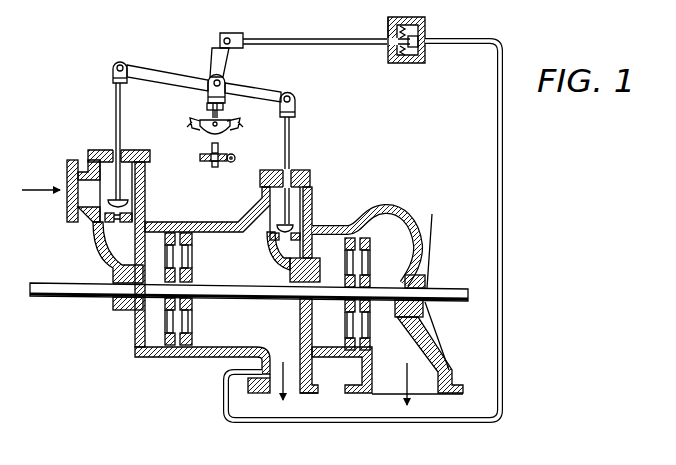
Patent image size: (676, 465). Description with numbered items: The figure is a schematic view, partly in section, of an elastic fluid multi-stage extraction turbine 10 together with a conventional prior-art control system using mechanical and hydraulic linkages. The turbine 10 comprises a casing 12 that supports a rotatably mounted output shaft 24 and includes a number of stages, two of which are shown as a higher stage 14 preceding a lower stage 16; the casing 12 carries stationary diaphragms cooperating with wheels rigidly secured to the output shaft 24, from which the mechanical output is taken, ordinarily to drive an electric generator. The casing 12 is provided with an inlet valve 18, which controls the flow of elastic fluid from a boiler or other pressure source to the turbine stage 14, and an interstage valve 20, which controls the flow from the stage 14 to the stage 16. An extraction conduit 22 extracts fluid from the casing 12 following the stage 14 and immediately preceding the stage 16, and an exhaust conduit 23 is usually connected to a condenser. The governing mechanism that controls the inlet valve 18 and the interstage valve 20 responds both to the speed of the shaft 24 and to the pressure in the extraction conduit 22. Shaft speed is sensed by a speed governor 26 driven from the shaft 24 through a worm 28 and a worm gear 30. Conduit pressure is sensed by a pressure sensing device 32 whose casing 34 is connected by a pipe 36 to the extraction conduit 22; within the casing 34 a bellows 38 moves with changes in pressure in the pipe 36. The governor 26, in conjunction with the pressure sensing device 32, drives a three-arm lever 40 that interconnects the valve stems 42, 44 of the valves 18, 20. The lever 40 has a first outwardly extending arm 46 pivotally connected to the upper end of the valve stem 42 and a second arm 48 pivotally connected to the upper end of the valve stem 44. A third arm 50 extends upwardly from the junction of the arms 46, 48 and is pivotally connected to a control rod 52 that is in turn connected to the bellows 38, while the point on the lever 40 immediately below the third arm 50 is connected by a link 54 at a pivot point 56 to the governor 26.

The elastic fluid multi-stage extraction turbine 10 is at (95, 129).
The casing 12 is at (138, 351).
The turbine stage 14 is at (199, 267).
The turbine stage 16 is at (376, 266).
The inlet valve 18 is at (109, 229).
The interstage valve 20 is at (310, 233).
The extraction conduit 22 is at (312, 370).
The exhaust conduit 23 is at (445, 376).
The output shaft 24 is at (238, 155).
The speed governor 26 is at (198, 127).
The worm 28 is at (235, 163).
The worm gear 30 is at (205, 158).
The pressure sensing device 32 is at (430, 30).
The casing 34 is at (421, 57).
The pipe 36 is at (503, 237).
The bellows 38 is at (389, 30).
The three-arm lever 40 is at (182, 70).
The valve stem 42 is at (117, 100).
The valve stem 44 is at (290, 135).
The first arm 46 is at (143, 68).
The second arm 48 is at (262, 90).
The third arm 50 is at (218, 58).
The control rod 52 is at (285, 38).
The link 54 is at (208, 97).
The pivot point 56 is at (225, 78).